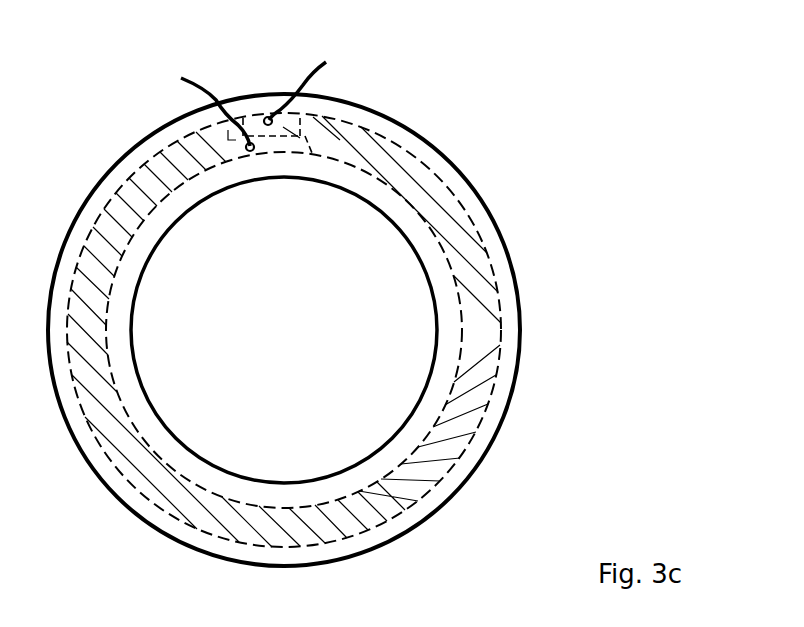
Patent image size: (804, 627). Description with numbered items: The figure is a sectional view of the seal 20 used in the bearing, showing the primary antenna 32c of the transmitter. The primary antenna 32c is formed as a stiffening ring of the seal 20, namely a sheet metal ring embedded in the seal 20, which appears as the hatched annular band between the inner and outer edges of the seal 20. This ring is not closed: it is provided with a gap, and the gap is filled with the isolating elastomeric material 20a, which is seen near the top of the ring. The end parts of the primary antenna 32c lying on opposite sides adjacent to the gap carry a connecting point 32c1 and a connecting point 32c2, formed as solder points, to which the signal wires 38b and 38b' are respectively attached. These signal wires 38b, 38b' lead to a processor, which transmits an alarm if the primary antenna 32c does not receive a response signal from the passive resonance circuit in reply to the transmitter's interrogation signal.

The seal 20 is at (513, 280).
The isolating elastomeric material 20a is at (262, 116).
The primary antenna 32c is at (425, 188).
The connecting point 32c1 is at (268, 114).
The connecting point 32c2 is at (248, 152).
The signal wire 38b is at (352, 89).
The signal wire 38b' is at (170, 112).